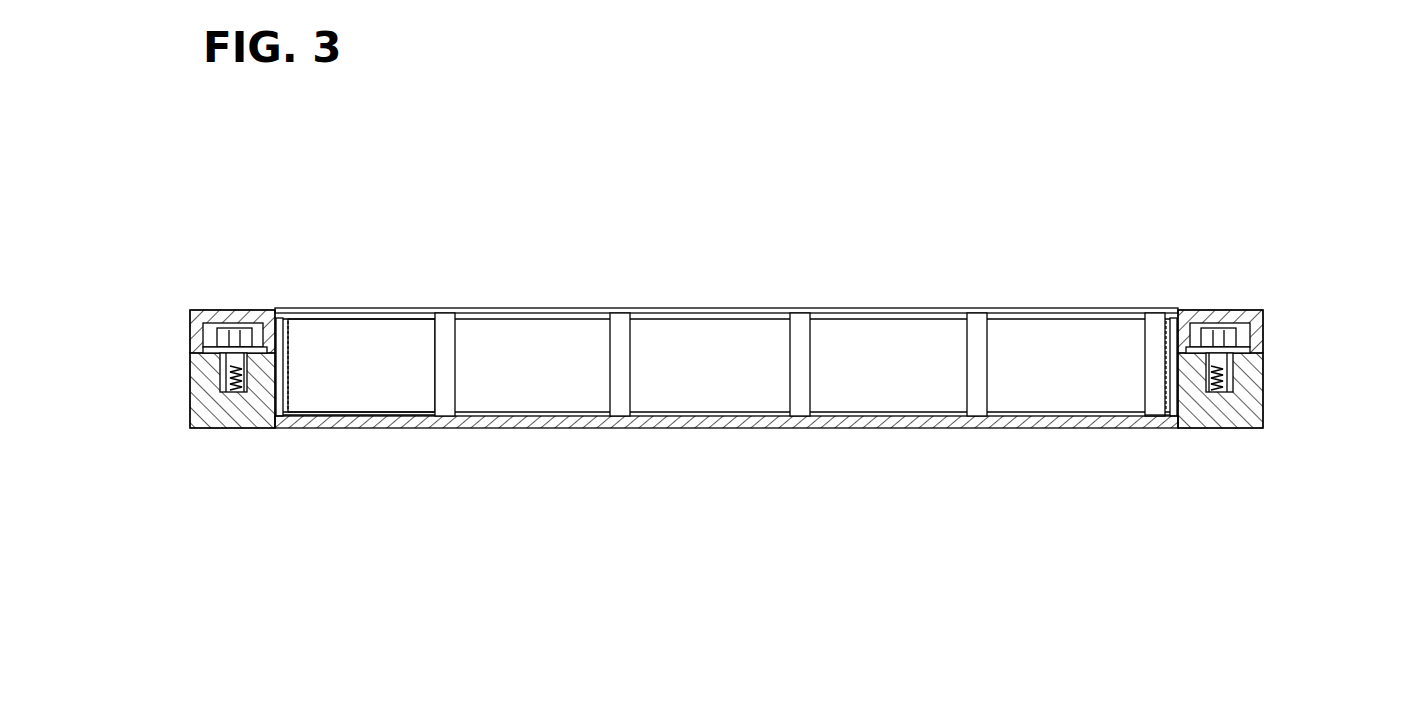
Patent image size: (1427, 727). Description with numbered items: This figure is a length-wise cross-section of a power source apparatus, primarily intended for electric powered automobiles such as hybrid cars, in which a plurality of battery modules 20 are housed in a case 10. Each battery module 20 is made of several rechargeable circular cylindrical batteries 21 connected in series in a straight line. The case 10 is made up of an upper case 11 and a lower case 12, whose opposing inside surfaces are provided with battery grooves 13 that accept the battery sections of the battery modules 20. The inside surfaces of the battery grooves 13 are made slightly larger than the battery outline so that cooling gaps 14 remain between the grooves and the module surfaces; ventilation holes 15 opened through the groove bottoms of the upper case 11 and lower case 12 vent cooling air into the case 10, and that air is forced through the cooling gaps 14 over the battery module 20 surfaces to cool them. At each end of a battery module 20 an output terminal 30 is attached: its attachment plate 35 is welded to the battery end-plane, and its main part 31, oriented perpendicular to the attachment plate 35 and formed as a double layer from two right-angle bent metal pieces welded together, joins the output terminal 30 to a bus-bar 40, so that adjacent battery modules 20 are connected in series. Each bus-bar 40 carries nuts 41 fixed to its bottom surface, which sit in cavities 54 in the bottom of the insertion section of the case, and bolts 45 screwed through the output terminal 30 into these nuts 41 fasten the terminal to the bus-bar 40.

The case 10 is at (1350, 399).
The upper case 11 is at (1256, 311).
The lower case 12 is at (1253, 378).
The battery grooves 13 is at (696, 410).
The cooling gaps 14 is at (670, 324).
The ventilation holes 15 is at (499, 294).
The battery module 20 is at (385, 399).
The batteries 21 is at (548, 392).
The output terminal 30 is at (350, 213).
The main part 31 is at (270, 316).
The attachment plate 35 is at (292, 325).
The bus-bar 40 is at (205, 355).
The nuts 41 is at (233, 393).
The bolts 45 is at (232, 323).
The cavities 54 is at (222, 379).